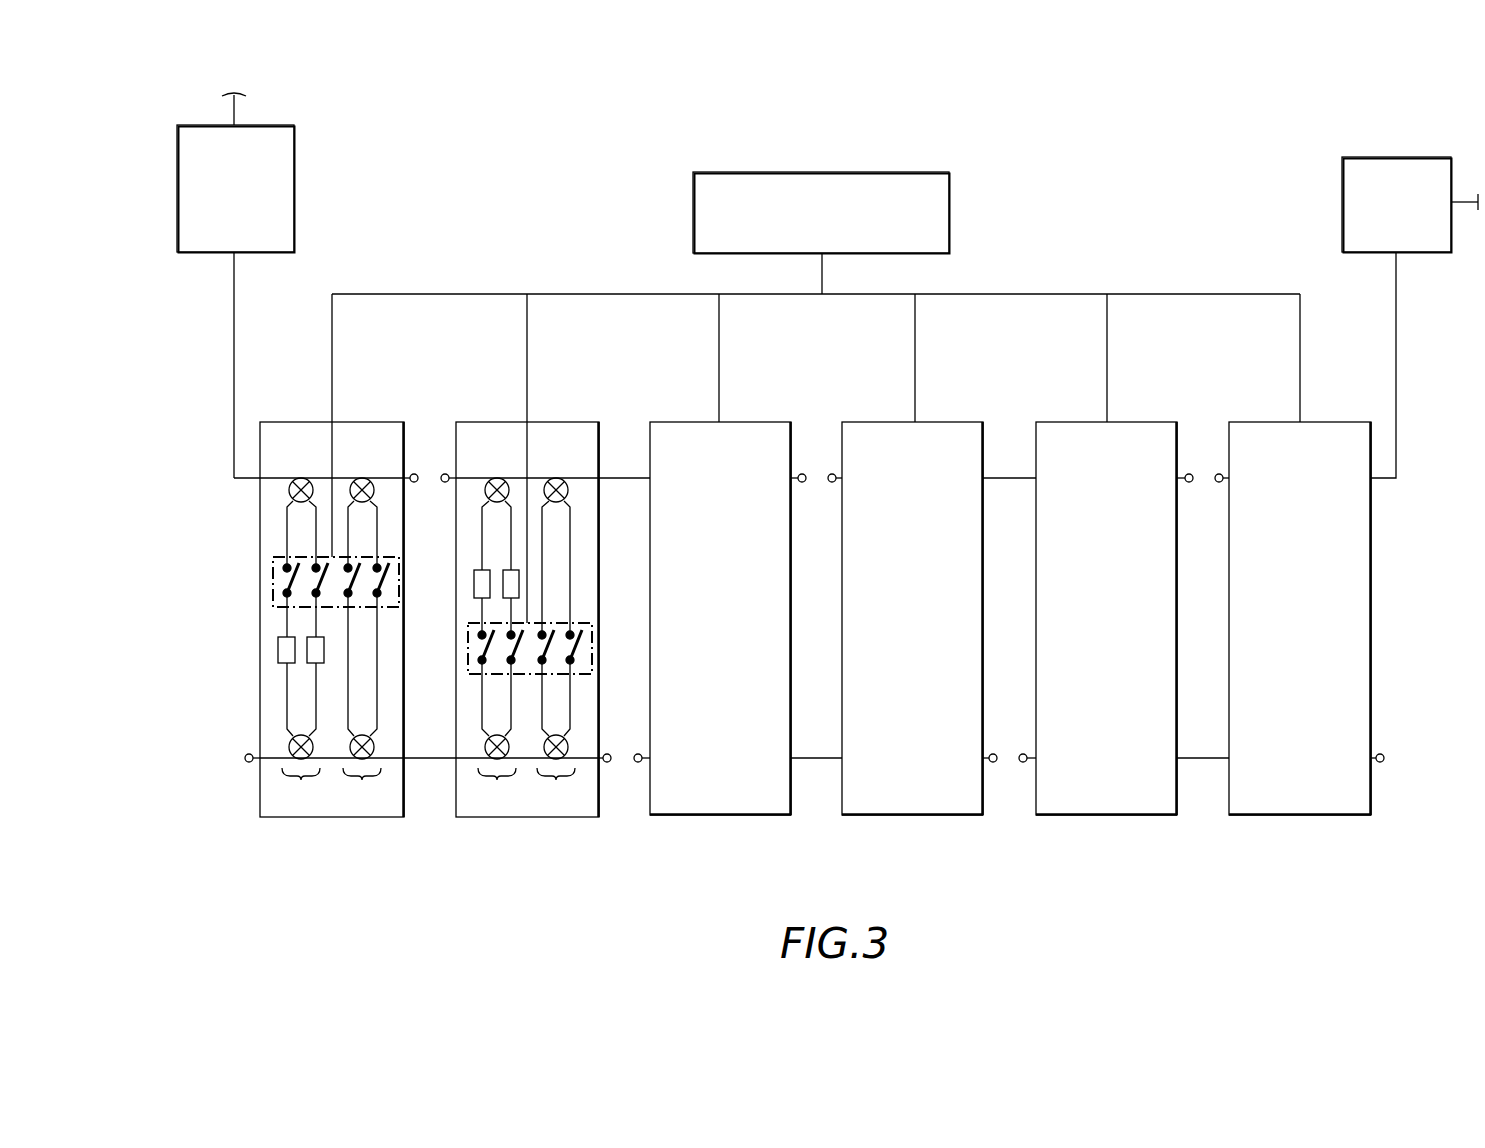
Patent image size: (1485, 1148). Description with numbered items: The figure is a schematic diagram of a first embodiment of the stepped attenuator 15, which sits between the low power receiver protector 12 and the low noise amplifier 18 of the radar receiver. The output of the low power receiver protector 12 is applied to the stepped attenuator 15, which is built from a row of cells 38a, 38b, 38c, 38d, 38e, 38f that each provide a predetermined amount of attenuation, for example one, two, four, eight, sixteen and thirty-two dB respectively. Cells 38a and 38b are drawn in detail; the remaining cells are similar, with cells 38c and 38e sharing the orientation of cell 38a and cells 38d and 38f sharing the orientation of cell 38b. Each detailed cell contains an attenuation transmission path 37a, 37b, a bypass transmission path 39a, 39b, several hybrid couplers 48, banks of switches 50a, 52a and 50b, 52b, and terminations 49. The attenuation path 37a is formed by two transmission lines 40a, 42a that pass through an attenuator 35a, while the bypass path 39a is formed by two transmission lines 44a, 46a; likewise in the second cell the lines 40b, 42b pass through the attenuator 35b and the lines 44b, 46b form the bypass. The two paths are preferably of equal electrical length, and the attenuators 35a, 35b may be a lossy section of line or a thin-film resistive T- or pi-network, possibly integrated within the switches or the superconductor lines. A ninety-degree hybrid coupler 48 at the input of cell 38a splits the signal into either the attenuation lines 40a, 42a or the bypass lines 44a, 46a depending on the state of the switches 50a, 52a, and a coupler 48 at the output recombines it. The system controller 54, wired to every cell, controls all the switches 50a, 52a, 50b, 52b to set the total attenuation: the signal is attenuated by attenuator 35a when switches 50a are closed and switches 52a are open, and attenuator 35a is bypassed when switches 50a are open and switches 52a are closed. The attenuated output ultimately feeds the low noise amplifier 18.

The low power receiver protector 12 is at (294, 142).
The stepped attenuator 15 is at (1046, 224).
The low noise amplifier 18 is at (1391, 157).
The system controller 54 is at (820, 172).
The attenuator 35a is at (307, 652).
The attenuator 35b is at (503, 583).
The attenuation transmission path 37a is at (302, 788).
The attenuation transmission path 37b is at (498, 788).
The cell 38a is at (352, 862).
The cell 38b is at (545, 862).
The cell 38c is at (737, 862).
The cell 38d is at (931, 862).
The cell 38e is at (1125, 862).
The cell 38f is at (1316, 862).
The bypass transmission path 39a is at (363, 788).
The bypass transmission path 39b is at (557, 788).
The transmission line 40a is at (287, 693).
The transmission line 40b is at (482, 516).
The transmission line 42a is at (316, 728).
The transmission line 42b is at (511, 543).
The transmission line 44a is at (348, 692).
The transmission line 44b is at (542, 516).
The transmission line 46a is at (377, 725).
The transmission line 46b is at (570, 572).
The hybrid coupler 48 is at (304, 478).
The termination 49 is at (444, 474).
The switch 50a is at (322, 578).
The switch 50b is at (517, 648).
The switch 52a is at (352, 580).
The switch 52b is at (548, 648).